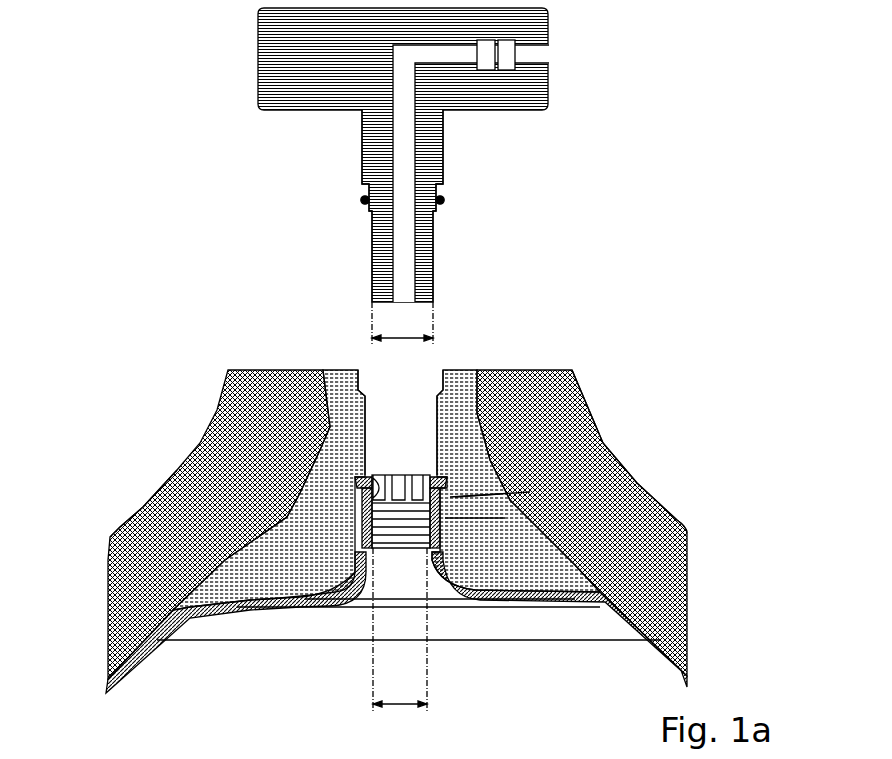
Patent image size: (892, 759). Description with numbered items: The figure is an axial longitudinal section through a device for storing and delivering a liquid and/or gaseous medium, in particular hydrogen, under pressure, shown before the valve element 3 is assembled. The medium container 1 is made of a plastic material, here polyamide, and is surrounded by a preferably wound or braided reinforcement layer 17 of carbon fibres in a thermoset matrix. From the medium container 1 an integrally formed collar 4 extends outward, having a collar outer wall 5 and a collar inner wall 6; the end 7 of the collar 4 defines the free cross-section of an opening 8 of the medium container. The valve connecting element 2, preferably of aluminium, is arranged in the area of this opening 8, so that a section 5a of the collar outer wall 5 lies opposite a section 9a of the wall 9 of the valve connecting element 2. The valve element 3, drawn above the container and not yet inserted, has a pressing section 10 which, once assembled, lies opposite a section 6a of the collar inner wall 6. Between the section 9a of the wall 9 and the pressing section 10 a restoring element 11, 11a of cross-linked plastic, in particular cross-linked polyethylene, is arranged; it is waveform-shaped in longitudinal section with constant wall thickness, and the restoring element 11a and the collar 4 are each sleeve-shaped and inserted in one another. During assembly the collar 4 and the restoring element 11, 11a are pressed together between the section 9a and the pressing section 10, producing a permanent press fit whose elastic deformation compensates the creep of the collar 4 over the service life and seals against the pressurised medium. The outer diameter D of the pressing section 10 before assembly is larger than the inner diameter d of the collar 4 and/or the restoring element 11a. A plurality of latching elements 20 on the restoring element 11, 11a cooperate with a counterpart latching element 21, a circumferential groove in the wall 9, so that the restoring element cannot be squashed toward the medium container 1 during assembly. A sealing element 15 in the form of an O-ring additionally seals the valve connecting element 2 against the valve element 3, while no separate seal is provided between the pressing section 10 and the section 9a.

The medium container 1 is at (135, 655).
The valve connecting element 2 is at (533, 570).
The valve element 3 is at (262, 66).
The collar 4 is at (602, 447).
The collar outer wall 5 is at (653, 497).
The section of the collar outer wall 5a is at (215, 418).
The collar inner wall 6 is at (452, 548).
The section of the collar inner wall 6a is at (252, 370).
The end of the collar 7 is at (583, 413).
The opening 8 is at (400, 513).
The wall of the valve connecting element 9 is at (374, 411).
The section of the wall 9a is at (349, 549).
The pressing section 10 is at (366, 250).
The restoring element 11 is at (458, 497).
The restoring element 11a is at (477, 495).
The sealing element 15 is at (448, 197).
The reinforcement layer 17 is at (350, 508).
The latching element 20 is at (449, 470).
The counterpart latching element 21 is at (461, 479).
The outer diameter of the pressing section D is at (402, 323).
The inner diameter d is at (400, 630).